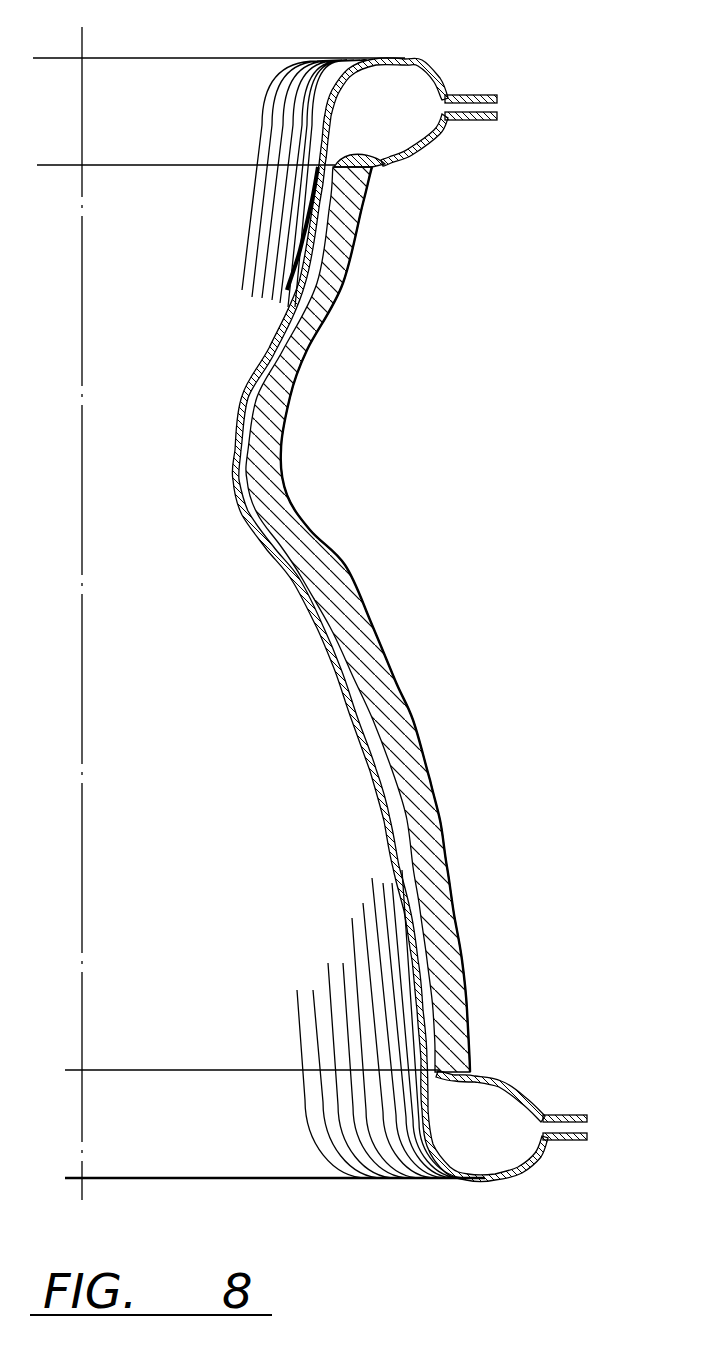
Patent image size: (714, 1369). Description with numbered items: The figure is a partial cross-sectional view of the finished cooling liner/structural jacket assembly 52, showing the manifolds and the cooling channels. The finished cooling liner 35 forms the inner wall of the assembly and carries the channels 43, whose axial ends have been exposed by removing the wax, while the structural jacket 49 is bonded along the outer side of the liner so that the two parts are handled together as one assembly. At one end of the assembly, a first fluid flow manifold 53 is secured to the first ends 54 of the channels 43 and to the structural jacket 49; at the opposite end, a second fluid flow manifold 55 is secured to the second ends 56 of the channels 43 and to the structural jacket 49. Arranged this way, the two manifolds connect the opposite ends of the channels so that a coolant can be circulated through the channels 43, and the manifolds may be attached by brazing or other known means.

The finished cooling liner 35 is at (233, 468).
The channels 43 is at (297, 307).
The structural jacket 49 is at (287, 393).
The finished cooling liner/structural jacket assembly 52 is at (352, 561).
The first fluid flow manifold 53 is at (443, 73).
The first ends of the channels 54 is at (338, 175).
The second fluid flow manifold 55 is at (523, 1093).
The second ends of the channels 56 is at (435, 1072).